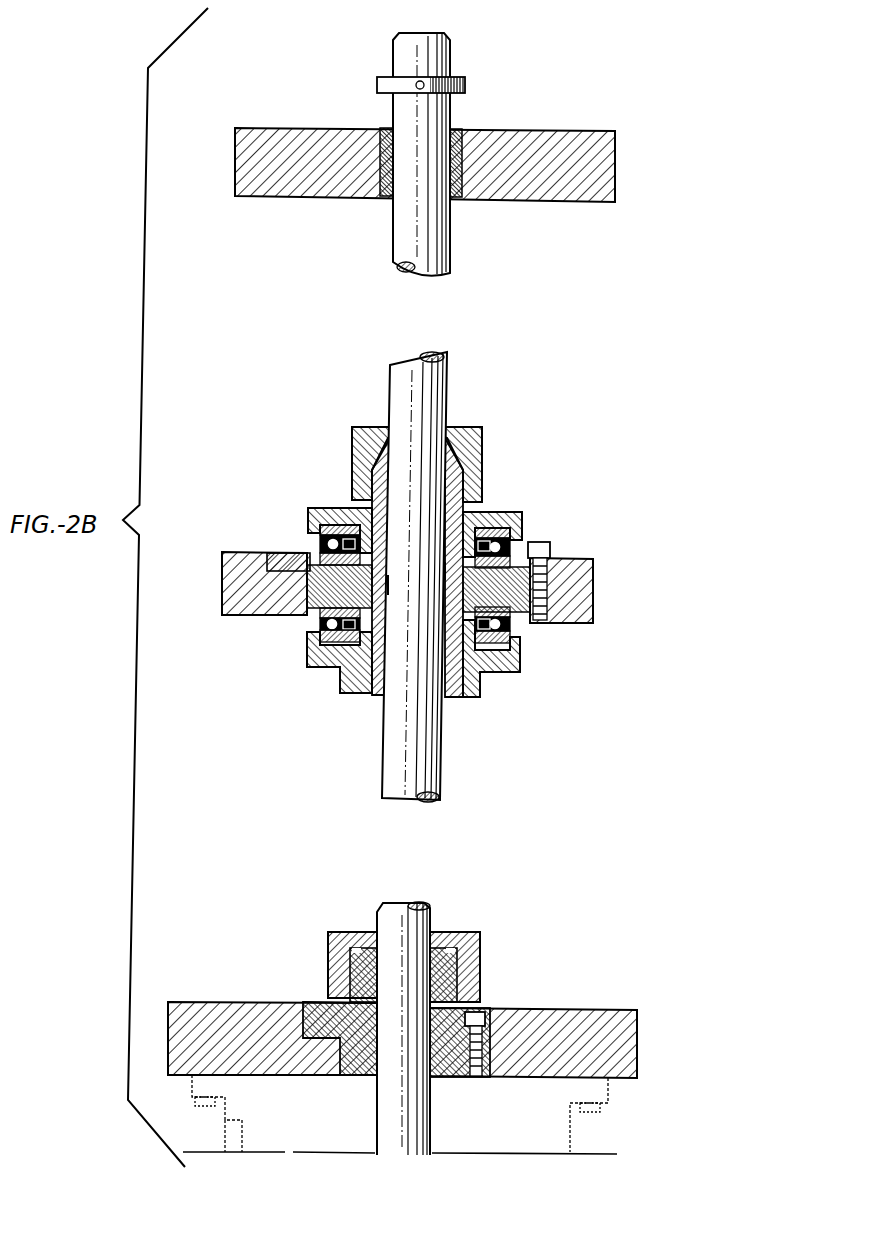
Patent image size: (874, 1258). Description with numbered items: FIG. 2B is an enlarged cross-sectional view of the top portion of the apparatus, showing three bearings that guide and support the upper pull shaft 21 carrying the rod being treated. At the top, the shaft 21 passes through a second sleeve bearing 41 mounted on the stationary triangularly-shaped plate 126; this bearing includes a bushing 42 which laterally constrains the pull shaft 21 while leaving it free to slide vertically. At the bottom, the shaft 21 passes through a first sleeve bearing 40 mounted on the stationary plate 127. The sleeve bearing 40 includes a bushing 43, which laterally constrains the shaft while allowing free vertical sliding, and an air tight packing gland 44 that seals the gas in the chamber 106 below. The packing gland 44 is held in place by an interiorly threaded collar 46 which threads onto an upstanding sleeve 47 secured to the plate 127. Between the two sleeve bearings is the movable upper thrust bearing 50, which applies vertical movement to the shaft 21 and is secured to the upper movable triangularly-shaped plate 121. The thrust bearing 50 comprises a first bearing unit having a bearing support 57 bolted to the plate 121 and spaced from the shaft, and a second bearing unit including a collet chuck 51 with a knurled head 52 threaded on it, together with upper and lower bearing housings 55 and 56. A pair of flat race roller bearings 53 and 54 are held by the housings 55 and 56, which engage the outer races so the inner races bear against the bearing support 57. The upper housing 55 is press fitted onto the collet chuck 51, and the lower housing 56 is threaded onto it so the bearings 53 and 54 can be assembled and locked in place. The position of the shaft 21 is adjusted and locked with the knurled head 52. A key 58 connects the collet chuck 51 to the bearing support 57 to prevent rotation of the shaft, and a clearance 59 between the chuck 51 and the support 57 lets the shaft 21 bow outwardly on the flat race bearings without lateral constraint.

The upper pull shaft 21 is at (447, 222).
The stationary triangularly-shaped plate 126 is at (349, 127).
The second sleeve bearing 41 is at (455, 130).
The bushing 42 is at (381, 195).
The knurled head 52 is at (482, 455).
The collet chuck 51 is at (463, 505).
The upper bearing housing 55 is at (325, 508).
The bearing support 57 is at (275, 553).
The flat race roller bearing 53 is at (320, 543).
The key 58 is at (453, 570).
The clearance 59 is at (381, 584).
The flat race roller bearing 54 is at (320, 625).
The lower bearing housing 56 is at (345, 672).
The upper thrust bearing 50 is at (536, 529).
The upper triangularly-shaped plate 121 is at (593, 600).
The interiorly threaded collar 46 is at (328, 934).
The upstanding sleeve 47 is at (350, 968).
The bushing 43 is at (370, 1076).
The first sleeve bearing 40 is at (490, 947).
The air tight packing gland 44 is at (480, 983).
The stationary triangularly-shaped plate 127 is at (588, 1008).
The chamber 106 is at (568, 1131).